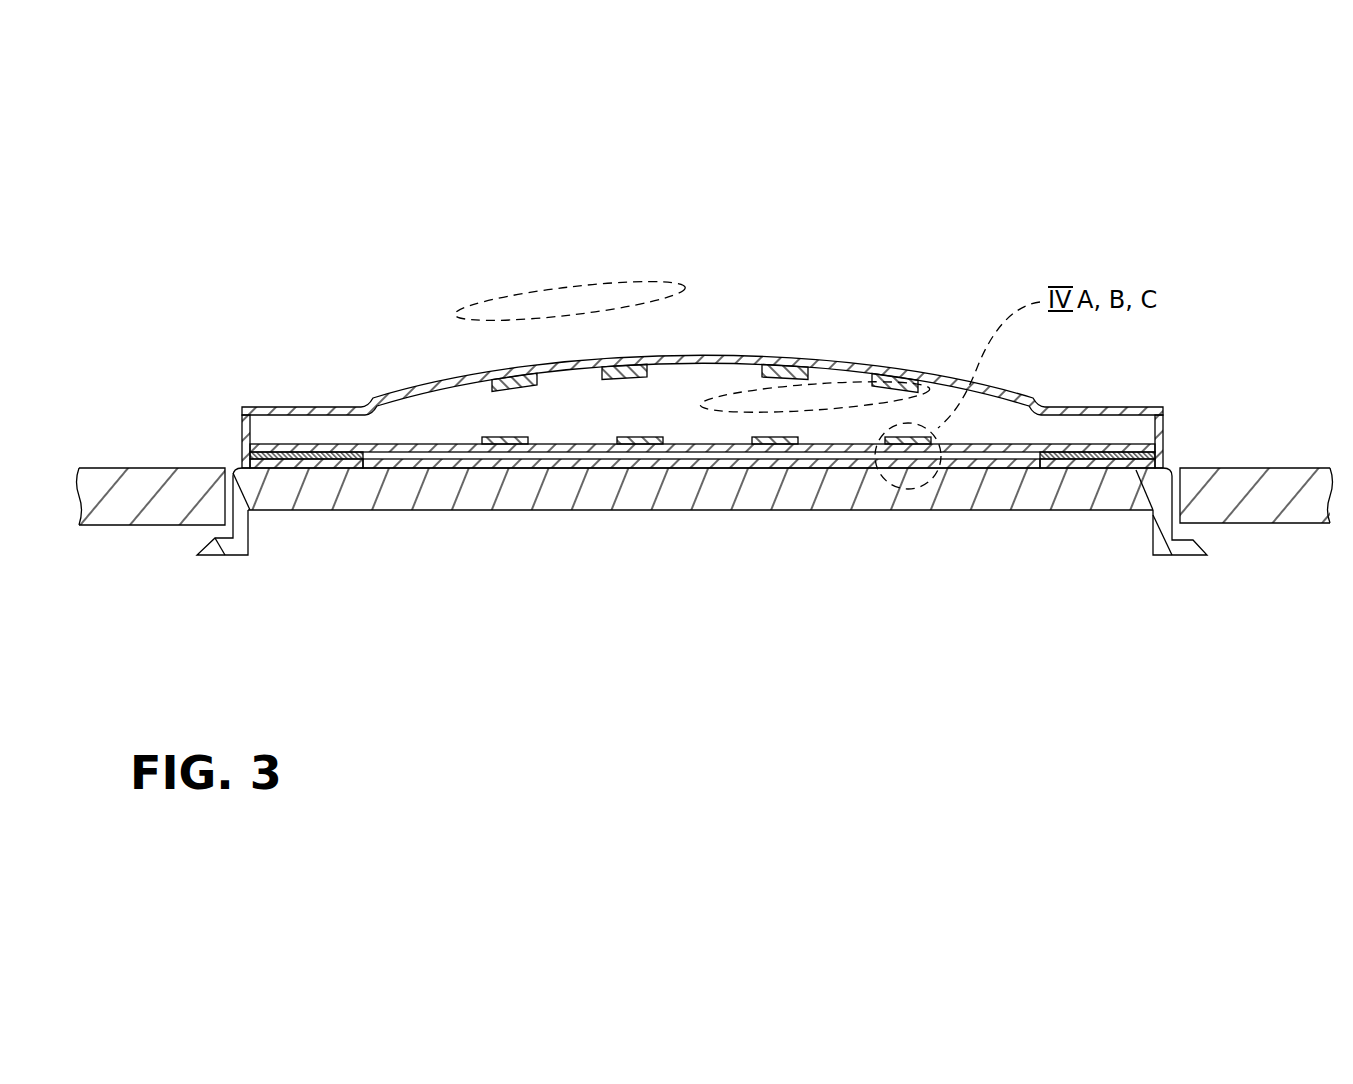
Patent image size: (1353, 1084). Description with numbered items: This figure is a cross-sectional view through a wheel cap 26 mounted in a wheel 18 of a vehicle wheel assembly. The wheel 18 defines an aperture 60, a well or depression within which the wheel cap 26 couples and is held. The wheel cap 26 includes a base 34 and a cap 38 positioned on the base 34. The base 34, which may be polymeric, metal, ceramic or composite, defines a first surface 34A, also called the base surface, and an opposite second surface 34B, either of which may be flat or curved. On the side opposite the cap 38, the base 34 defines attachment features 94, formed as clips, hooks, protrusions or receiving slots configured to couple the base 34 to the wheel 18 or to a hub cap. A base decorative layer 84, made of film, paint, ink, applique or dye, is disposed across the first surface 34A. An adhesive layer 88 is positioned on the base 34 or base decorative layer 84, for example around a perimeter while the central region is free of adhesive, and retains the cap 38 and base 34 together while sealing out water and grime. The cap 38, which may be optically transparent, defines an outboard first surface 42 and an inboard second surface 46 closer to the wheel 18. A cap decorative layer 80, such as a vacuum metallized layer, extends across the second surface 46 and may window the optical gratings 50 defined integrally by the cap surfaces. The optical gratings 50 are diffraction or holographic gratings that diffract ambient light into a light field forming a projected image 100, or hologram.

The wheel 18 is at (148, 488).
The wheel cap 26 is at (231, 400).
The base 34 is at (466, 492).
The first surface 34A is at (654, 470).
The second surface 34B is at (806, 511).
The cap 38 is at (1145, 432).
The first surface 42 is at (815, 357).
The second surface 46 is at (986, 446).
The optical grating 50 is at (505, 373).
The aperture 60 is at (227, 460).
The cap decorative layer 80 is at (300, 452).
The base decorative layer 84 is at (553, 466).
The adhesive layer 88 is at (305, 462).
The attachment feature 94 is at (238, 570).
The projected image 100 is at (598, 281).